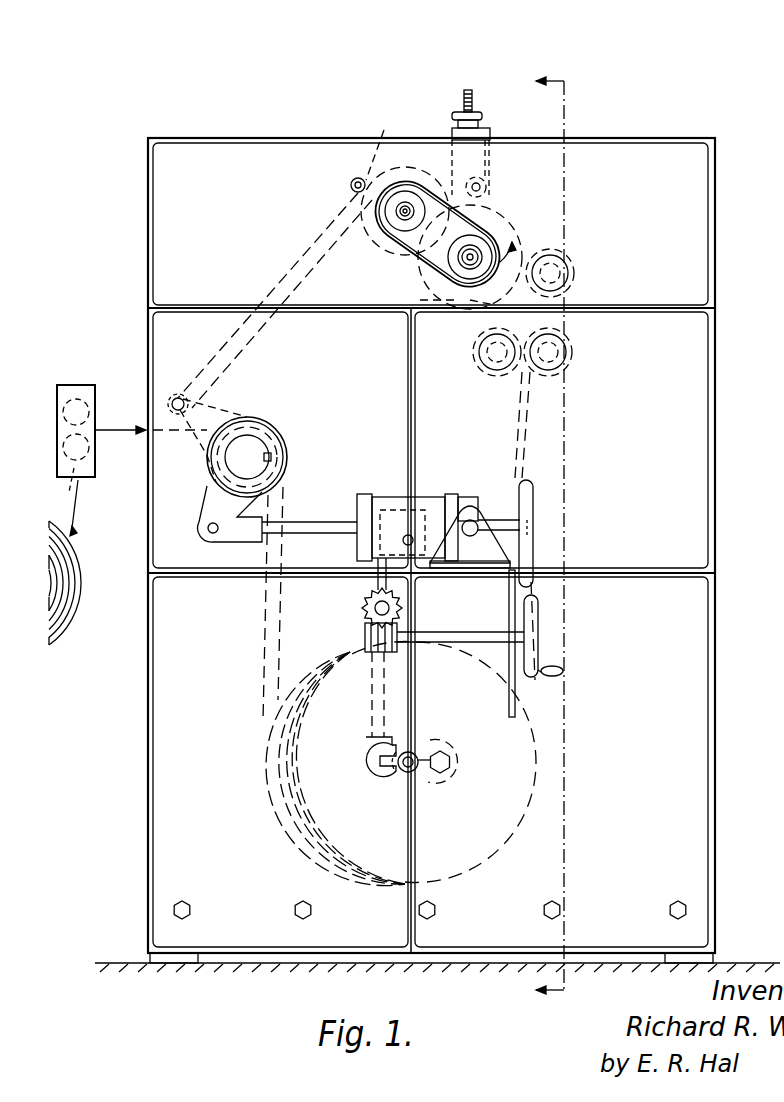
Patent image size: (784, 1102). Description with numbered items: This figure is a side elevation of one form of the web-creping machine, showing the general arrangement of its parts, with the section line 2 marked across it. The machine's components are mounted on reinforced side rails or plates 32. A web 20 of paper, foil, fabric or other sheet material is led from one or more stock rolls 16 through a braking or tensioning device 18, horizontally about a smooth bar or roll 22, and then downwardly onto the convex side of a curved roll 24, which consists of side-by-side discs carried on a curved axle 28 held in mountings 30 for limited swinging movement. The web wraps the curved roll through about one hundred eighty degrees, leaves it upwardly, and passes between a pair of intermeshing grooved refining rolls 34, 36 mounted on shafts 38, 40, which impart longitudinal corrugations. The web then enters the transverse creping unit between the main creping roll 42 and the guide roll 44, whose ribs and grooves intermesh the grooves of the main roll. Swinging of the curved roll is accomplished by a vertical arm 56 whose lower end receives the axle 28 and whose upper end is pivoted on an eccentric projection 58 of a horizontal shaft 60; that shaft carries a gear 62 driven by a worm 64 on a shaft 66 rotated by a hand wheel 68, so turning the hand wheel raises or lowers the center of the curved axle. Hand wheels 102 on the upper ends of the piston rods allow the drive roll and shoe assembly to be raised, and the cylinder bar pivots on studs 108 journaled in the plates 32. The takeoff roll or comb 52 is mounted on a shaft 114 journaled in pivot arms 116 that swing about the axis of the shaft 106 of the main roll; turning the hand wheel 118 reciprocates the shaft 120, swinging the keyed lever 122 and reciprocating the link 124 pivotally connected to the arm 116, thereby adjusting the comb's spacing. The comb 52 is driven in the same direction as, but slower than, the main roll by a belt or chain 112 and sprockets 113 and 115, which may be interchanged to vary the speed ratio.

The section line 2- 2 is at (551, 537).
The stock roll 16 is at (76, 604).
The braking or tensioning device 18 is at (77, 385).
The web 20 is at (134, 438).
The smooth bar or roll 22 is at (272, 432).
The curved roll 24 is at (262, 810).
The curved axle 28 is at (393, 776).
The mountings 30 is at (441, 784).
The side rails or plates 32 is at (690, 730).
The refining roll 34 is at (497, 368).
The refining roll 36 is at (556, 372).
The shaft 38 is at (480, 362).
The shaft 40 is at (573, 352).
The main creping roll 42 is at (540, 240).
The guide roll 44 is at (574, 270).
The takeoff roll or comb 52 is at (404, 180).
The vertical arm 56 is at (370, 708).
The eccentric projection 58 is at (362, 608).
The horizontal shaft 60 is at (390, 610).
The gear 62 is at (406, 633).
The worm 64 is at (397, 646).
The shaft 66 is at (494, 636).
The hand wheel 68 is at (540, 662).
The hand wheel 102 is at (458, 104).
The shaft of the main roll 106 is at (468, 259).
The stud 108 is at (487, 189).
The belt or chain 112 is at (492, 228).
The sprocket 113 is at (465, 275).
The shaft 114 is at (402, 213).
The sprocket 115 is at (404, 220).
The pivot arm 116 is at (384, 150).
The hand wheel 118 is at (533, 562).
The shaft 120 is at (322, 518).
The keyed lever 122 is at (207, 496).
The link 124 is at (276, 288).